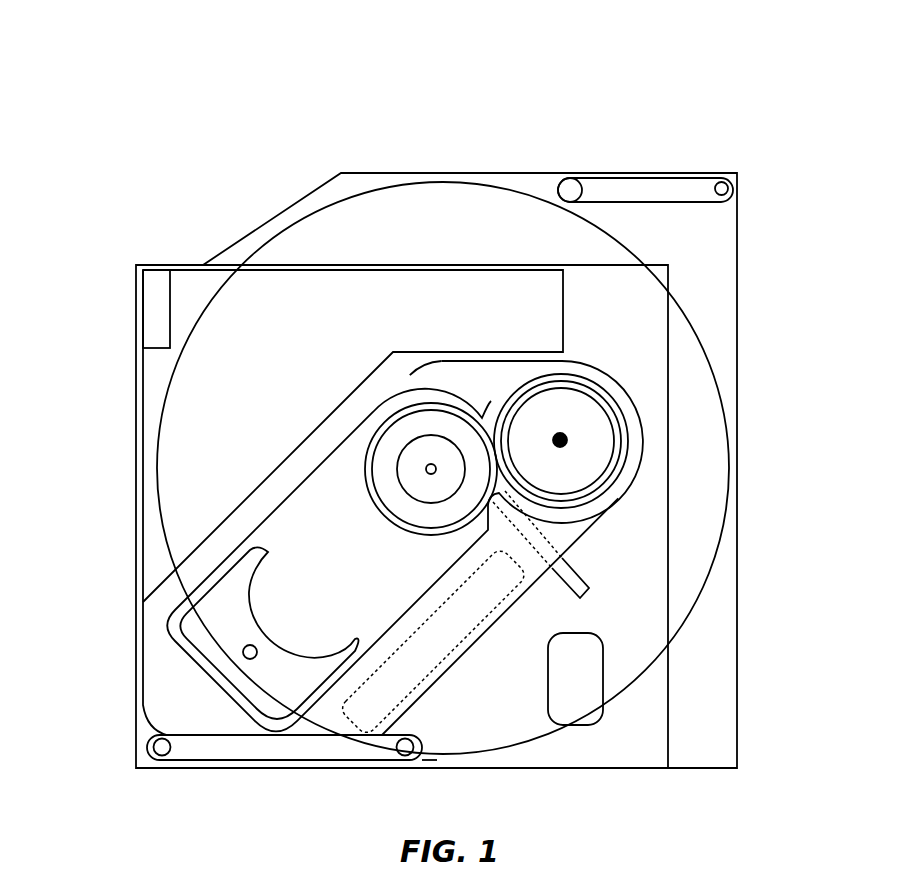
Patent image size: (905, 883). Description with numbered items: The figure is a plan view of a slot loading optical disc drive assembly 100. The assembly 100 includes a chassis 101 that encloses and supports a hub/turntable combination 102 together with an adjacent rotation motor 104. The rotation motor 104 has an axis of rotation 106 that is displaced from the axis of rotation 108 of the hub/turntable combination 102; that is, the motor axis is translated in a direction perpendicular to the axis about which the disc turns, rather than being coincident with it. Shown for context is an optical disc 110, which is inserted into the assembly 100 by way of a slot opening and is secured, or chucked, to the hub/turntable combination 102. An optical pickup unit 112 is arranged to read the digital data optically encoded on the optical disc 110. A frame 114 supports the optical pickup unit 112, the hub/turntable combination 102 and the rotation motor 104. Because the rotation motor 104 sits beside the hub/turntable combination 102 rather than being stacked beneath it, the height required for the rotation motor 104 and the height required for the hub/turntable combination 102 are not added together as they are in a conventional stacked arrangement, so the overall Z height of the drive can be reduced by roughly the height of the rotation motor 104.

The slot loading optical disc drive (ODD) assembly 100 is at (725, 106).
The chassis 101 is at (133, 367).
The hub/turntable combination 102 is at (445, 512).
The rotation motor 104 is at (617, 457).
The axis of rotation 106 is at (560, 440).
The axis of rotation 108 is at (427, 465).
The optical disc 110 is at (707, 448).
The optical pickup unit 112 is at (190, 625).
The frame 114 is at (168, 702).